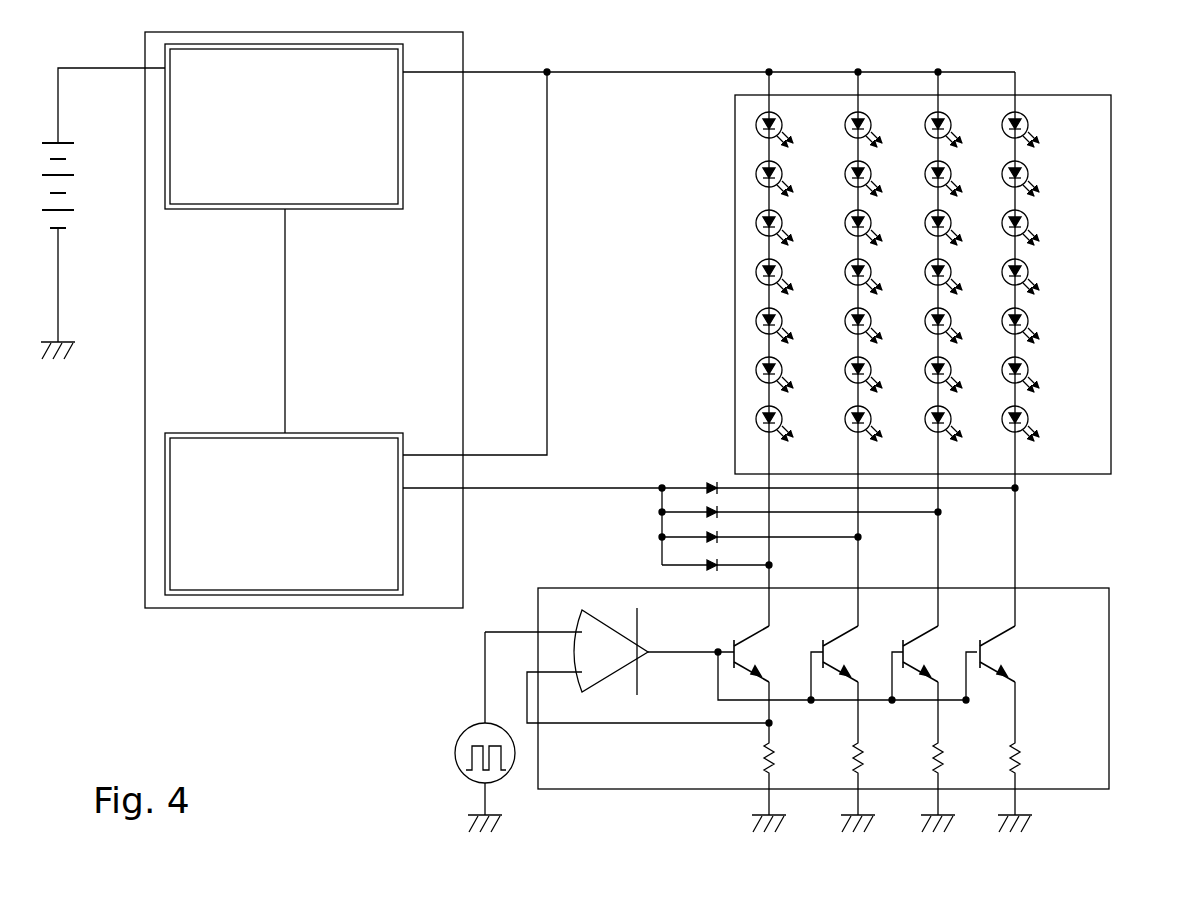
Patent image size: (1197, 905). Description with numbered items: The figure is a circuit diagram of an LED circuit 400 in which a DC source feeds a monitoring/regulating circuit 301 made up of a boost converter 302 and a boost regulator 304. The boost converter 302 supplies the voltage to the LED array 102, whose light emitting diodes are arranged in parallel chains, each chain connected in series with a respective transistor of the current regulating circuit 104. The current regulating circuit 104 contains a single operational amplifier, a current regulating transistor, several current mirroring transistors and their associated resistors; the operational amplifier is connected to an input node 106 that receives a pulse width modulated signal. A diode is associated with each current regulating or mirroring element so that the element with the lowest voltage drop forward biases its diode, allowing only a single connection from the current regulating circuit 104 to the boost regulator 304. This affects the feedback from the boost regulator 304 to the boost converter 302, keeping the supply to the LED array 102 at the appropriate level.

The circuit 400 is at (330, 714).
The monitoring/regulating circuit 301 is at (145, 417).
The boost converter 302 is at (340, 213).
The boost regulator 304 is at (345, 433).
The LED array 102 is at (1111, 293).
The current regulating circuit 104 is at (1109, 690).
The input node 106 is at (459, 742).